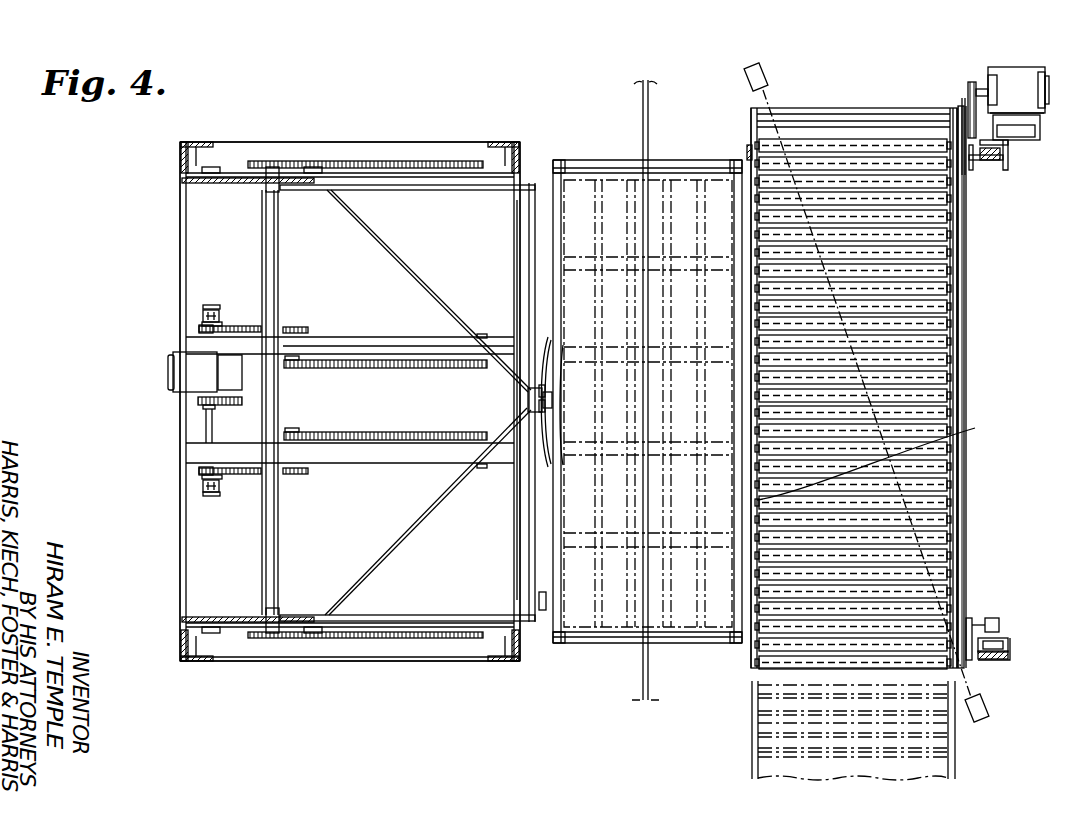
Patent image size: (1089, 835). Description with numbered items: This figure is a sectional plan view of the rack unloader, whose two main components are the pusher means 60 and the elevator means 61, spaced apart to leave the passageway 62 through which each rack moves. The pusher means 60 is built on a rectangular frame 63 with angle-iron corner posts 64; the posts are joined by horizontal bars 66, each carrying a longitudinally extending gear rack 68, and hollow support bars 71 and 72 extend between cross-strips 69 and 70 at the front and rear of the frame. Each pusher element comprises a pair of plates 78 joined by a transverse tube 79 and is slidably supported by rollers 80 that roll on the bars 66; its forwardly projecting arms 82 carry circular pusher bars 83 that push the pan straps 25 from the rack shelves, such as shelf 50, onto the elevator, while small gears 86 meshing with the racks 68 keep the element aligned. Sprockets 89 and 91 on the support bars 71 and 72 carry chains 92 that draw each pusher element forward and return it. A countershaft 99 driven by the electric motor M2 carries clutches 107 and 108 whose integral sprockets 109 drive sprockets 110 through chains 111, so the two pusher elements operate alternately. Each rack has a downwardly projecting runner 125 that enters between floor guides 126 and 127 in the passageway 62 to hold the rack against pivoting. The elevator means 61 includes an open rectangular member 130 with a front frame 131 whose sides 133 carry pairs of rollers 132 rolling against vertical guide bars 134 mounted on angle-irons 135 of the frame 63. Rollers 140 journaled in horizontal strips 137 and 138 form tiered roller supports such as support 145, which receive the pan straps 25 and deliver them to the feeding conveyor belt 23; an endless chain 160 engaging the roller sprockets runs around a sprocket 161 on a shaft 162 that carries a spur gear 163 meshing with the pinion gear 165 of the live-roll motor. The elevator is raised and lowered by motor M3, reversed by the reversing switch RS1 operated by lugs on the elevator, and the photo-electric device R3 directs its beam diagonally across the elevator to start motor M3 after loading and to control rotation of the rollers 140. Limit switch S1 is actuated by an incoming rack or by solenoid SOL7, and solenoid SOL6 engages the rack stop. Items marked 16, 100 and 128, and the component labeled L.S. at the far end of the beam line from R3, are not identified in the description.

The shelf 50 is at (443, 706).
The pusher means 60 is at (496, 670).
The elevator means 61 is at (973, 534).
The passageway 62 is at (743, 672).
The rectangular frame 63 is at (213, 676).
The angle-iron corner post 64 is at (190, 142).
The horizontal bar 66 is at (411, 191).
The gear rack 68 is at (381, 161).
The cross-strip 69 is at (512, 236).
The cross-strip 70 is at (187, 243).
The hollow support bar 71 is at (379, 341).
The hollow support bar 72 is at (380, 465).
The plate 78 is at (243, 178).
The transverse horizontal tube 79 is at (261, 570).
The roller 80 is at (213, 167).
The forwardly projecting arm 82 is at (535, 185).
The pusher bar 83 is at (518, 518).
The small gear 86 is at (278, 168).
The sprocket 89 is at (296, 440).
The sprocket 91 is at (470, 368).
The chain 92 is at (372, 432).
The countershaft 99 is at (206, 430).
The gear 100 is at (176, 388).
The clutch 107 is at (235, 305).
The clutch 108 is at (223, 503).
The integral sprocket 109 is at (199, 329).
The sprocket 110 is at (306, 333).
The chain 111 is at (252, 336).
The runner 125 is at (566, 385).
The guide 126 is at (530, 341).
The guide 127 is at (568, 436).
The latch 128 is at (528, 396).
The open rectangular member 130 is at (742, 132).
The rectangular front frame 131 is at (958, 369).
The roller 132 is at (982, 160).
The side 133 is at (1000, 162).
The vertical guide bar 134 is at (1040, 128).
The angle-iron 135 is at (1008, 166).
The horizontal strip 137 is at (964, 261).
The horizontal strip 138 is at (975, 428).
The roller 140 is at (944, 538).
The roller support 145 is at (898, 551).
The endless chain 160 is at (966, 303).
The sprocket 161 is at (962, 108).
The shaft 162 is at (855, 116).
The spur gear 163 is at (1000, 113).
The pinion gear 165 is at (973, 82).
The support 16 is at (1008, 142).
The conveyor belt 23 is at (966, 776).
The strap of loaded pans 25 is at (611, 176).
The electric motor M2 is at (174, 373).
The elevator motor M3 is at (1050, 86).
The limit switch L.S. is at (770, 74).
The photo-electric device R3 is at (988, 712).
The reversing switch RS1 is at (1000, 625).
The limit switch S1 is at (547, 630).
The solenoid SOL6 is at (547, 632).
The solenoid SOL7 is at (547, 630).